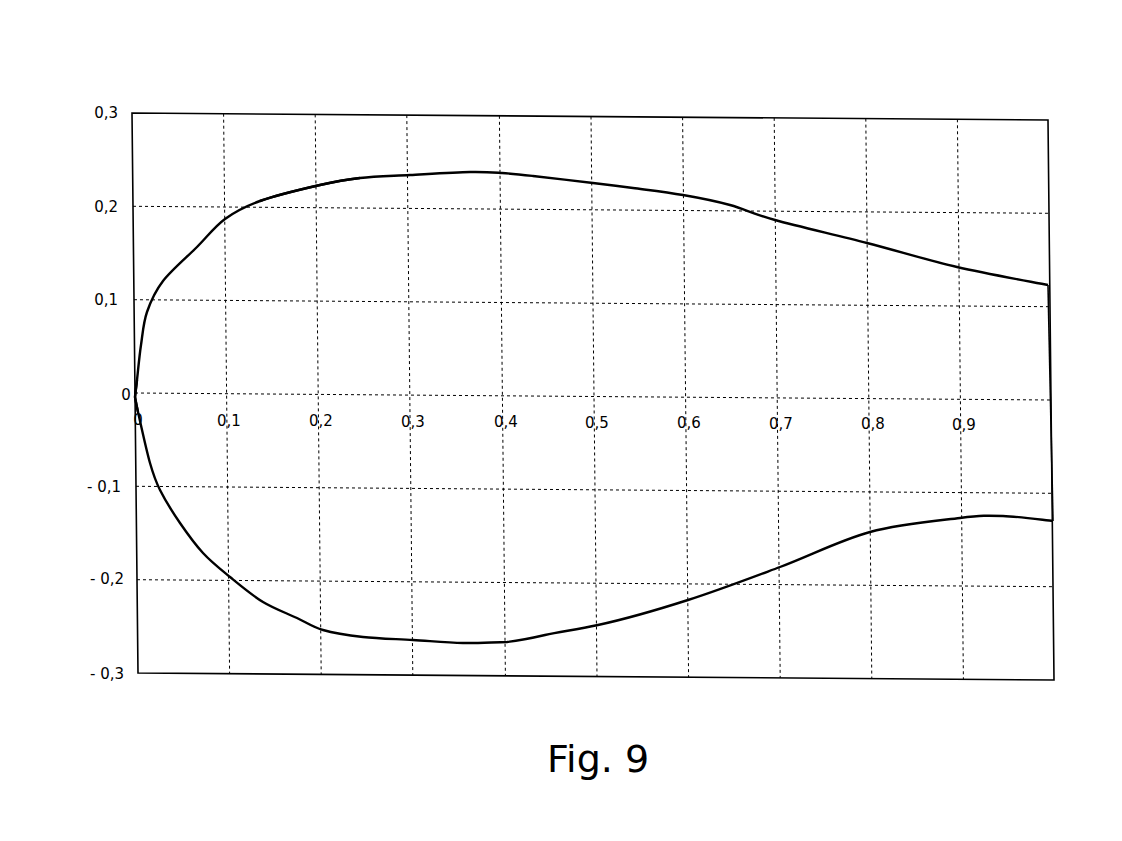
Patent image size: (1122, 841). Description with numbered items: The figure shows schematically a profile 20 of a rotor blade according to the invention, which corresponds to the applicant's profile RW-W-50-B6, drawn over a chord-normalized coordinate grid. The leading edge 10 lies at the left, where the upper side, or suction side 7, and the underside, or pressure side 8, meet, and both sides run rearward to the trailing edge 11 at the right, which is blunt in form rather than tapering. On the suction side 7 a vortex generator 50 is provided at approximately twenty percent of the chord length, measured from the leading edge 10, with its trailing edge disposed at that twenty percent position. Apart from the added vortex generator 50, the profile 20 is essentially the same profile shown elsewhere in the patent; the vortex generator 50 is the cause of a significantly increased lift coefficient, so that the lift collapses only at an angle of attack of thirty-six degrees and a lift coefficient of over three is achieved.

The suction side 7 is at (590, 399).
The pressure side 8 is at (292, 624).
The leading edge 10 is at (132, 396).
The trailing edge 11 is at (1083, 403).
The profile 20 is at (537, 176).
The vortex generator 50 is at (313, 180).